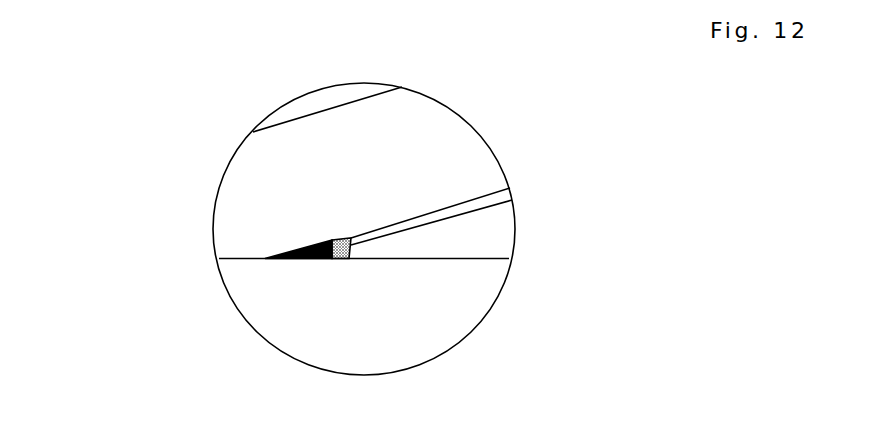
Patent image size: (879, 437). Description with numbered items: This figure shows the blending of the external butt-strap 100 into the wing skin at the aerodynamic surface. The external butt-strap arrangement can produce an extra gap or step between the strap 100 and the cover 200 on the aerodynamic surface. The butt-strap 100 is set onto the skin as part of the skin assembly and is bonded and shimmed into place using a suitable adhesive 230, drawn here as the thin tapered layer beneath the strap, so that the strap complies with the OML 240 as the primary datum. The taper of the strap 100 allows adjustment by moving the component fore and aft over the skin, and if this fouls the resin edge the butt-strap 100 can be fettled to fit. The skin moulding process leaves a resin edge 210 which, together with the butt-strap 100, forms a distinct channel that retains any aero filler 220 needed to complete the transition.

The butt-strap 100 is at (493, 226).
The cover 200 is at (268, 169).
The resin edge 210 is at (308, 259).
The aero filler 220 is at (338, 259).
The adhesive 230 is at (462, 207).
The OML 240 is at (433, 258).